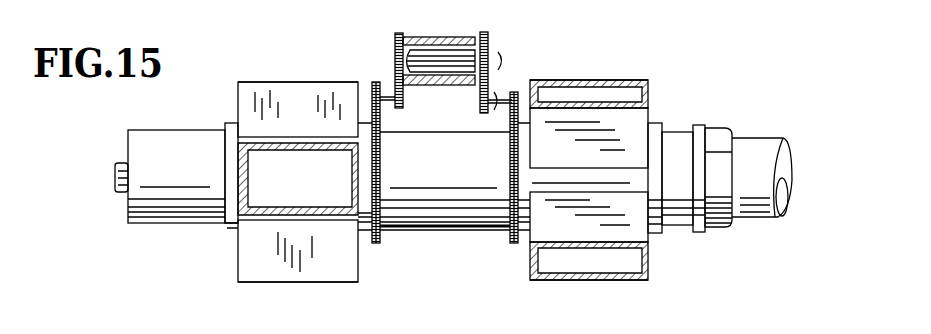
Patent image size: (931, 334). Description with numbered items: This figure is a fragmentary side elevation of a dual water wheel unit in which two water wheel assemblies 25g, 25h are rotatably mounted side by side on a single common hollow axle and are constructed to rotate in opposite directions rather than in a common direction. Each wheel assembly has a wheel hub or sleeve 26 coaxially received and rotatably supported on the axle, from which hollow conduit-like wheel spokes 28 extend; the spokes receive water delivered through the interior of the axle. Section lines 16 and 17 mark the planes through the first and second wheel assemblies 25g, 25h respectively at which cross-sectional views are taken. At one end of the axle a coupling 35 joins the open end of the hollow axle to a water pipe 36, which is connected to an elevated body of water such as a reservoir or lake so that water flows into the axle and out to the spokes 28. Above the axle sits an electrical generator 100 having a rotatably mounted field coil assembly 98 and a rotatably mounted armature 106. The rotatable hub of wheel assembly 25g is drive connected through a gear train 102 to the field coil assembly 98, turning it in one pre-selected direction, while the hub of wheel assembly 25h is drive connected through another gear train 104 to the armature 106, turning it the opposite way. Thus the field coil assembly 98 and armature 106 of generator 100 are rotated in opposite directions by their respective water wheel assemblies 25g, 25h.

The section line 16- 16 is at (313, 117).
The section line 17- 17 is at (570, 63).
The wheel assembly 25g is at (362, 268).
The wheel assembly 25h is at (527, 276).
The wheel hub 26 is at (230, 227).
The wheel spokes 28 is at (238, 100).
The coupling 35 is at (722, 130).
The water pipe 36 is at (765, 143).
The field coil assembly 98 is at (460, 37).
The generator 100 is at (497, 58).
The gear train 102 is at (380, 123).
The gear train 104 is at (510, 138).
The armature 106 is at (425, 55).